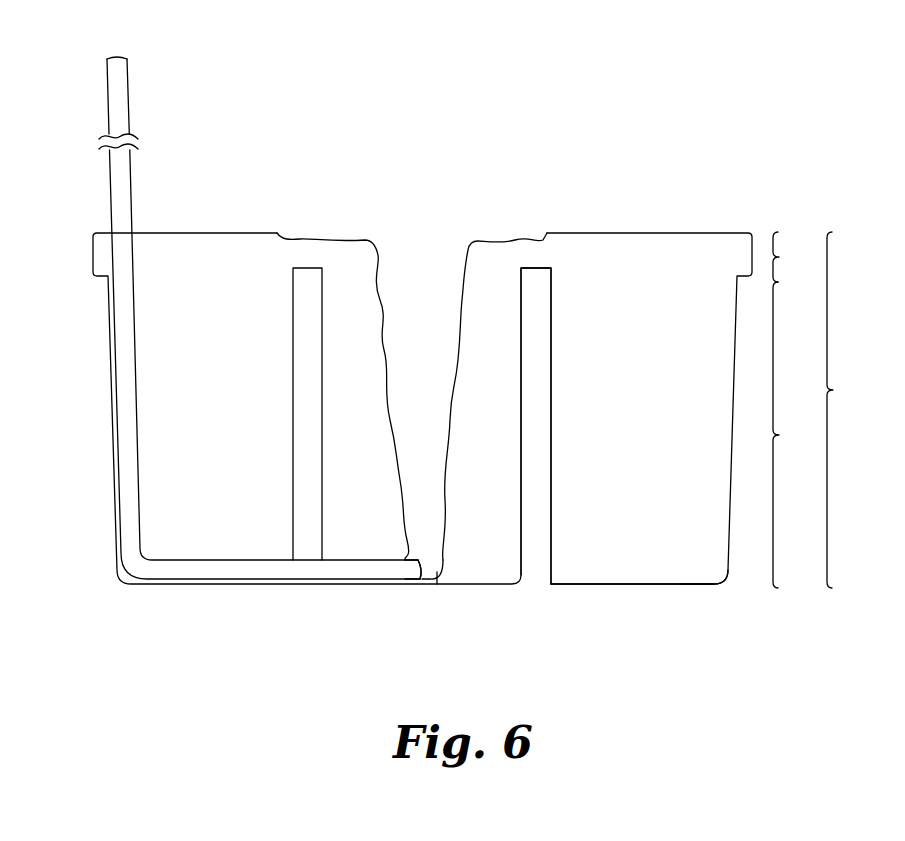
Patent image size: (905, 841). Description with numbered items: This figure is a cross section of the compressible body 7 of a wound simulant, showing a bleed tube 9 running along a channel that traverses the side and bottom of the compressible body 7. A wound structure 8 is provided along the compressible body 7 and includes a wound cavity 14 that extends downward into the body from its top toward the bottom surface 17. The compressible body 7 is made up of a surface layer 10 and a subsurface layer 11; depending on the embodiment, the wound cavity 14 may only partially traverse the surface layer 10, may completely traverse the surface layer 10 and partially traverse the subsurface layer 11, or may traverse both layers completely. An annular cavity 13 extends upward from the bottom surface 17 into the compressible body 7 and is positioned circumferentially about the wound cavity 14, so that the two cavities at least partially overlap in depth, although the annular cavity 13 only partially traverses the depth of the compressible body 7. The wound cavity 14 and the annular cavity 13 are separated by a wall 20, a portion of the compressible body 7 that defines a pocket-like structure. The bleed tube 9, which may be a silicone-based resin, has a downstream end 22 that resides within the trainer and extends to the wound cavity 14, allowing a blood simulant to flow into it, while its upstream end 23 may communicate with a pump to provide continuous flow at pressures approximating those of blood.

The compressible body 7 is at (841, 410).
The wound structure 8 is at (438, 221).
The bleed tube 9 is at (123, 298).
The surface layer 10 is at (795, 257).
The subsurface layer 11 is at (795, 435).
The annular cavity 13 is at (533, 460).
The wound cavity 14 is at (433, 337).
The bottom surface 17 is at (695, 584).
The wall 20 is at (499, 507).
The downstream end 22 is at (418, 573).
The upstream end 23 is at (228, 318).